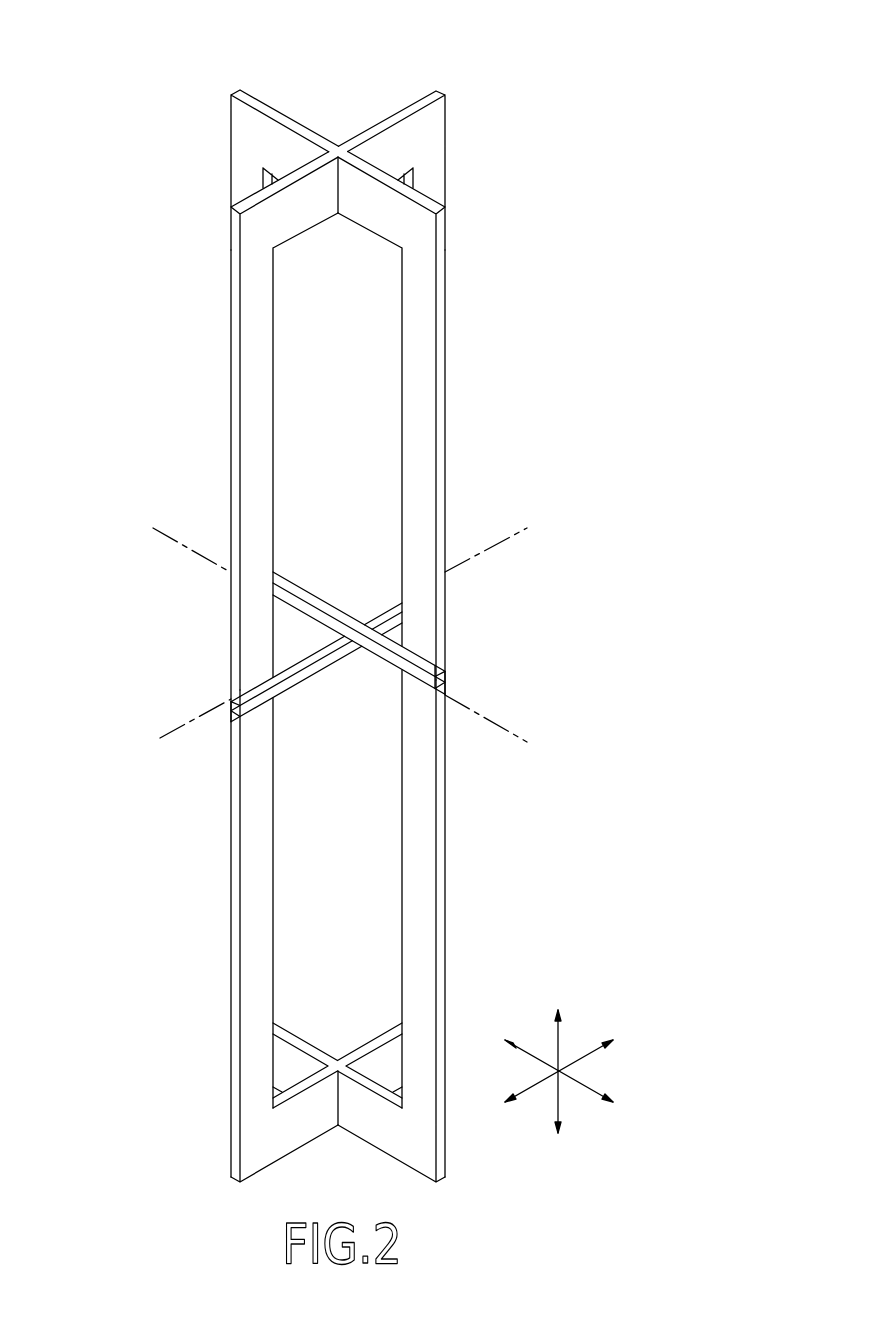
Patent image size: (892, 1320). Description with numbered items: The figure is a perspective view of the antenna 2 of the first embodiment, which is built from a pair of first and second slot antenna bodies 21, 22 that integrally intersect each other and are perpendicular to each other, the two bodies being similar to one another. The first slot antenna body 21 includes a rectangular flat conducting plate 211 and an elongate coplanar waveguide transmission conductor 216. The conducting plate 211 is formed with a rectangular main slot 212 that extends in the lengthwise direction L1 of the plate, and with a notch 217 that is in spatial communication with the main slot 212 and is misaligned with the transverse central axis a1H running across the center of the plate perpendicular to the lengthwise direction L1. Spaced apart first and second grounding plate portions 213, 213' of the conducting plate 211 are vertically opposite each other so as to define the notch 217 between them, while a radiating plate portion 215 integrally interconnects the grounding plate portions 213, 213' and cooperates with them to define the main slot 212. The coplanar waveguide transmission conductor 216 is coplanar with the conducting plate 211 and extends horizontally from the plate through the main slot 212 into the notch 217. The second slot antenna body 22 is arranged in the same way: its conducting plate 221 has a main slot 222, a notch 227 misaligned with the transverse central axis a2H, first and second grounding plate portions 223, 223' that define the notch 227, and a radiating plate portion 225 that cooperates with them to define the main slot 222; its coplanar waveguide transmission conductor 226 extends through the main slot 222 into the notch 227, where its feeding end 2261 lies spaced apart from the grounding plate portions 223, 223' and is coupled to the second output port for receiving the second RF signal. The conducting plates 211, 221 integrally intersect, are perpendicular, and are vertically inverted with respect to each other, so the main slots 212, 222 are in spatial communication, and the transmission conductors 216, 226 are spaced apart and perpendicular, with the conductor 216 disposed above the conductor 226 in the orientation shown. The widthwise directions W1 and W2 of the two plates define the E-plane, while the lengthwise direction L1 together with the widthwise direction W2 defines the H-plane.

The antenna 2 is at (170, 57).
The first slot antenna body 21 is at (283, 108).
The second slot antenna body 22 is at (391, 107).
The conducting plate 211 is at (228, 136).
The conducting plate 221 is at (448, 136).
The main slot 212 is at (385, 267).
The main slot 222 is at (291, 267).
The first grounding plate portion 213 is at (437, 416).
The second grounding plate portion 213' is at (441, 931).
The first grounding plate portion 223 is at (236, 936).
The second grounding plate portion 223' is at (236, 421).
The radiating plate portion 215 is at (240, 181).
The radiating plate portion 225 is at (436, 181).
The coplanar waveguide transmission conductor 216 is at (312, 597).
The coplanar waveguide transmission conductor 226 is at (312, 672).
The notch 217 is at (444, 669).
The notch 227 is at (248, 717).
The feeding end 2261 is at (233, 710).
The transverse central axis a1H is at (364, 641).
The transverse central axis a2H is at (368, 619).
The lengthwise direction L1 is at (581, 1052).
The widthwise direction W1 is at (581, 1078).
The widthwise direction W2 is at (581, 1061).